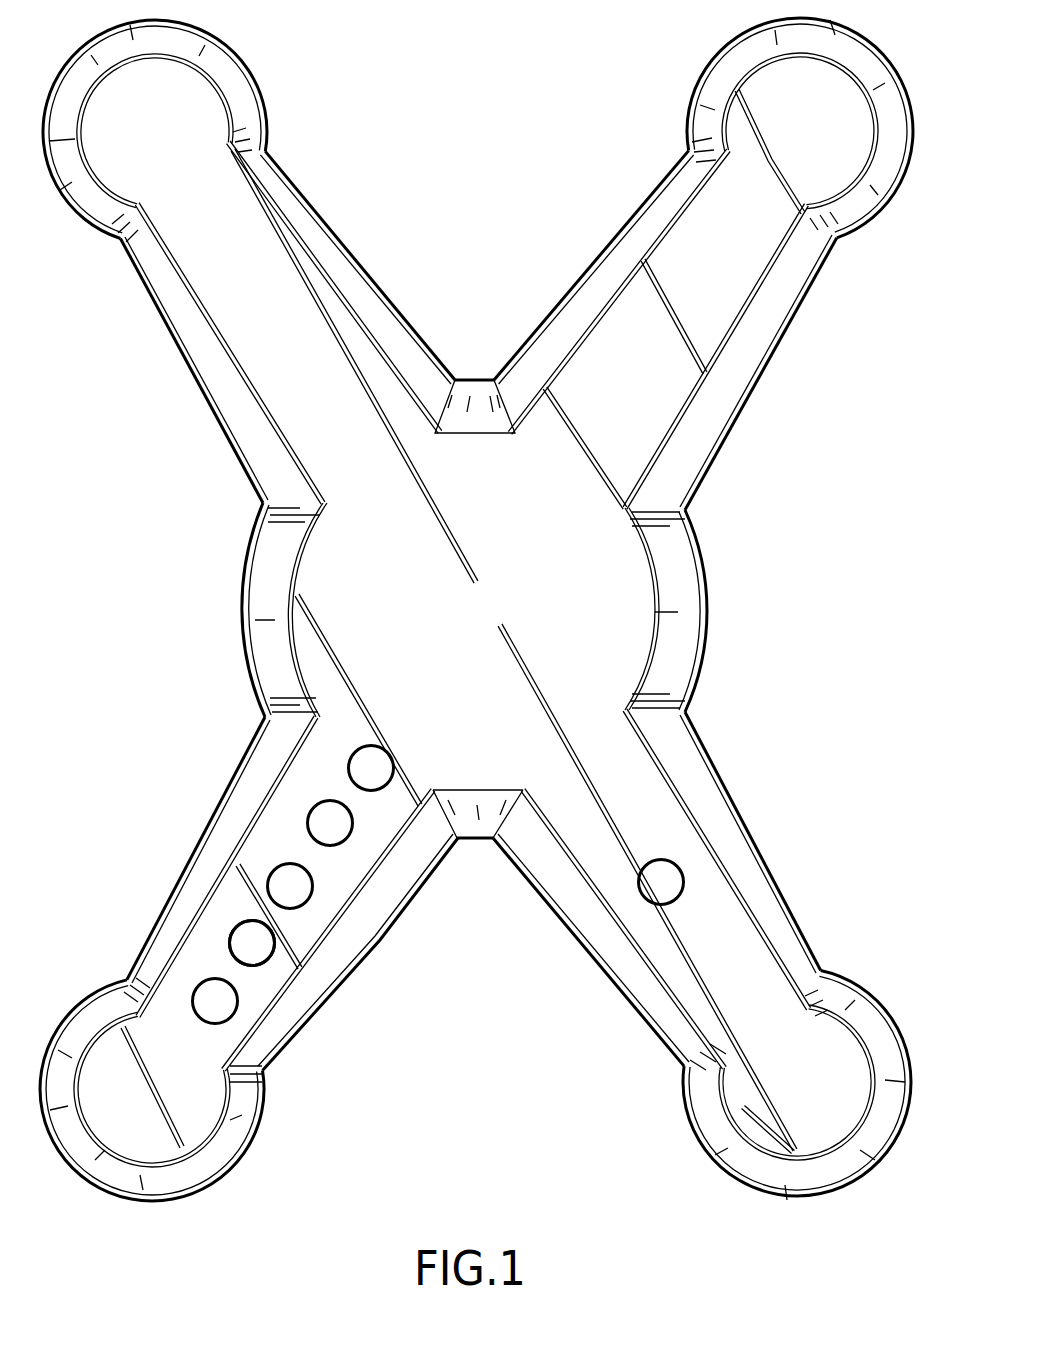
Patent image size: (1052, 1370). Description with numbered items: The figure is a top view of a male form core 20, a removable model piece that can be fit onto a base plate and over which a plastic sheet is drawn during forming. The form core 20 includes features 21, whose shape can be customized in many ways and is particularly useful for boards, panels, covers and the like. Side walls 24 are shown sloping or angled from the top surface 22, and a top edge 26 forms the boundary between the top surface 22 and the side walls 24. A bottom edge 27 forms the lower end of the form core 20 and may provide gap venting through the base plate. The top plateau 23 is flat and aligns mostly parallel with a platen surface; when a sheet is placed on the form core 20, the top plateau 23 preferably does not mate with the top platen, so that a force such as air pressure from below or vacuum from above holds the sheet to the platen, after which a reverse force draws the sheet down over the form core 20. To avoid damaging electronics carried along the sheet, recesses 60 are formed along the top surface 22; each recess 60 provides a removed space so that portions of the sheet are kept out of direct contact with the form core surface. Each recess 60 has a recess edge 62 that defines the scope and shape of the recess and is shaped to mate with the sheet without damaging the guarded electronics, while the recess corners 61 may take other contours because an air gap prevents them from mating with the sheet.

The form core 20 is at (176, 568).
The features 21 is at (236, 48).
The top surface 22 is at (290, 322).
The top plateau 23 is at (500, 627).
The side walls 24 is at (903, 132).
The top edge 26 is at (570, 348).
The bottom edge 27 is at (302, 193).
The recesses 60 is at (667, 882).
The recess corners 61 is at (233, 942).
The recess edge 62 is at (272, 955).